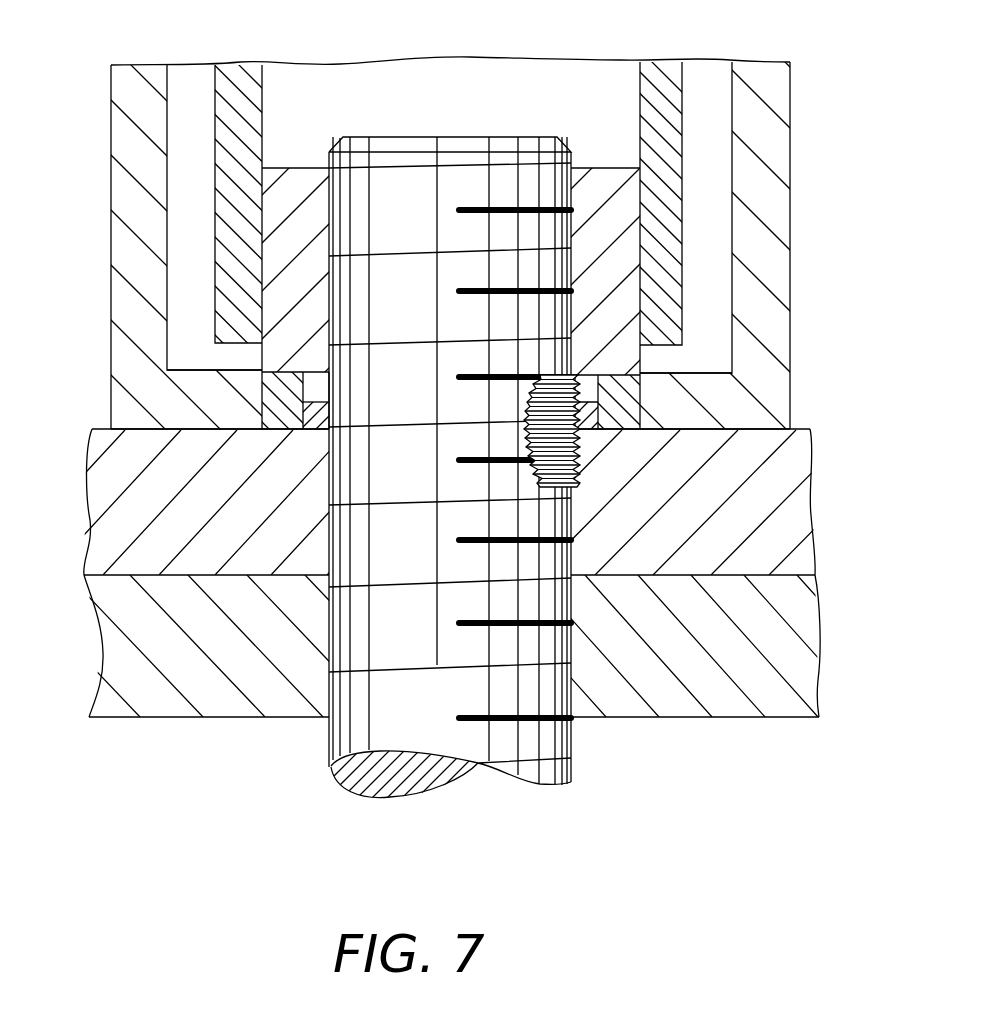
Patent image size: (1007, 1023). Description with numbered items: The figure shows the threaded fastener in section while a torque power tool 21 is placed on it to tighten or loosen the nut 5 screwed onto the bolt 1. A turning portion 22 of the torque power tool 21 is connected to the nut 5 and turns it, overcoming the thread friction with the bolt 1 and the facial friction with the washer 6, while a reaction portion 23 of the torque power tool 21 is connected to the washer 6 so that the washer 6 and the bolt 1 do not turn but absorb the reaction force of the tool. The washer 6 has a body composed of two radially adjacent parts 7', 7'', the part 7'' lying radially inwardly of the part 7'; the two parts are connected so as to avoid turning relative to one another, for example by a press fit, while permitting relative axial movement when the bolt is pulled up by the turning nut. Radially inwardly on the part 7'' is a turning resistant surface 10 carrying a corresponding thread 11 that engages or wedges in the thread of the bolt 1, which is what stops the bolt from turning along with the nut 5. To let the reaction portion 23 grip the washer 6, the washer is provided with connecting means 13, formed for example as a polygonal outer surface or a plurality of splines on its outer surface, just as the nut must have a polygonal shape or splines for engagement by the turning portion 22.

The bolt 1 is at (322, 791).
The nut 5 is at (607, 180).
The washer 6 is at (612, 428).
The outer part of washer body 7' is at (247, 403).
The inner part of washer body 7'' is at (293, 447).
The turning resistant surface 10 is at (330, 421).
The thread on turning resistant surface 11 is at (553, 428).
The connecting means of washer 13 is at (645, 392).
The torque power tool 21 is at (814, 228).
The turning portion of torque power tool 22 is at (683, 88).
The reaction portion of torque power tool 23 is at (788, 392).